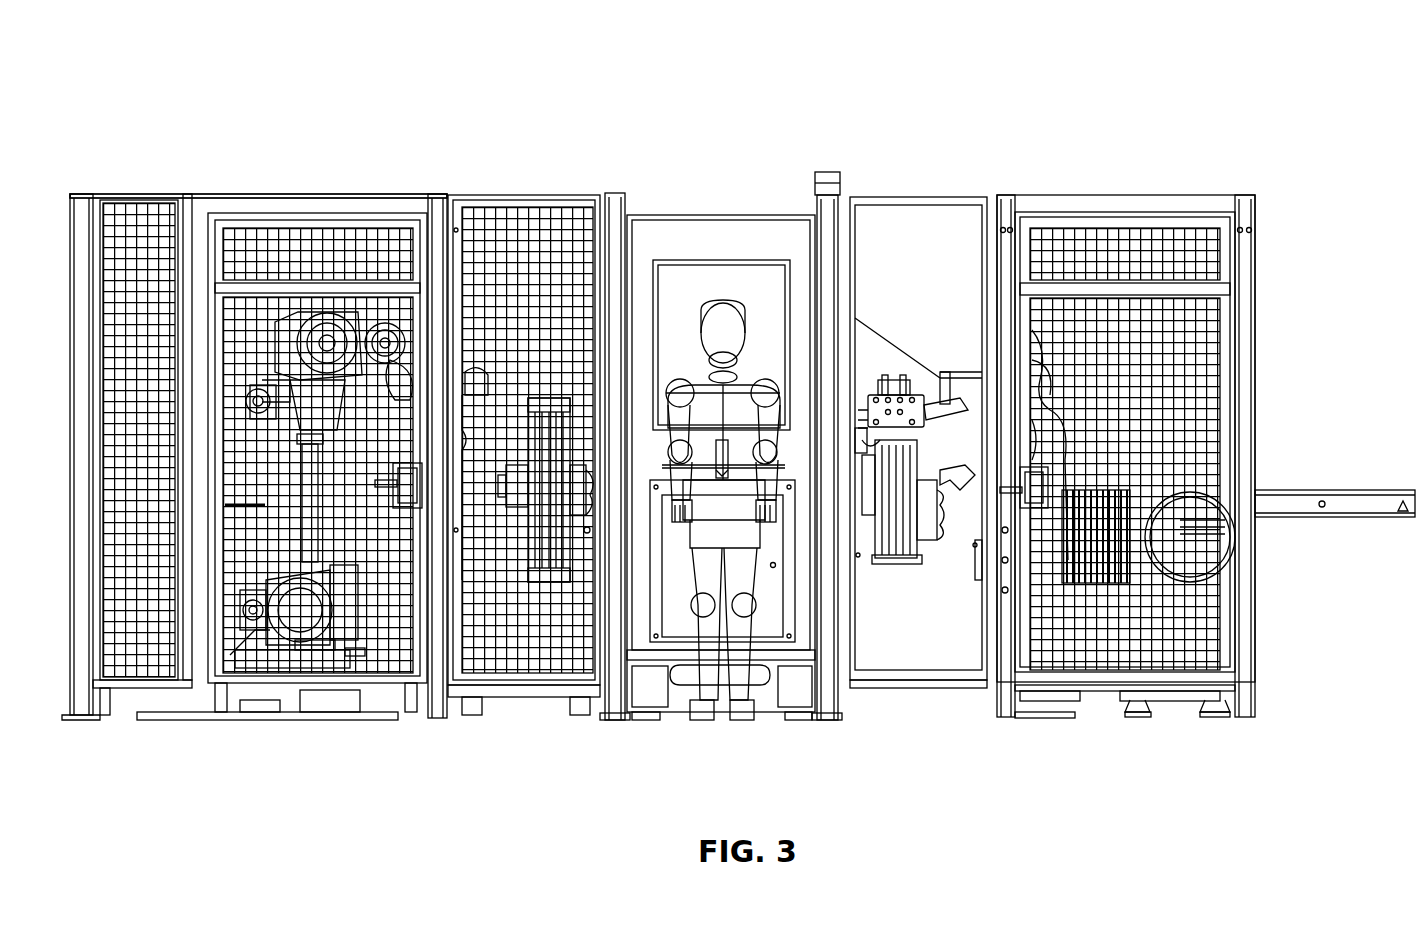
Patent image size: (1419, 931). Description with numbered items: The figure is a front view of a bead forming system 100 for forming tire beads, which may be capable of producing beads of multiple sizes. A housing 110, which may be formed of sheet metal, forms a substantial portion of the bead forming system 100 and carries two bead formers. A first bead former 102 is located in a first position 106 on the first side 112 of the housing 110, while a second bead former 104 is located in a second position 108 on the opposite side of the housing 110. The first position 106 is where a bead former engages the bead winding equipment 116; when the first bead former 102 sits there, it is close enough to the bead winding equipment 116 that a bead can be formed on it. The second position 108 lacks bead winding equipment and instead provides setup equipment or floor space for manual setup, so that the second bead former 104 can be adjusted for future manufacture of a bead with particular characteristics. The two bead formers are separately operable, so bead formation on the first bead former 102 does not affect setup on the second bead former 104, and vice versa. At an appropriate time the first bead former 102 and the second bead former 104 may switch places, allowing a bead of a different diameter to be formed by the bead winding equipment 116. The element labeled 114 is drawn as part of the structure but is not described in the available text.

The bead forming system 100 is at (320, 64).
The first bead former 102 is at (916, 556).
The second bead former 104 is at (545, 582).
The first position 106 is at (990, 182).
The second position 108 is at (528, 178).
The housing 110 is at (742, 232).
The first side 112 is at (832, 220).
The left support post 114 is at (616, 200).
The bead winding equipment 116 is at (1300, 496).